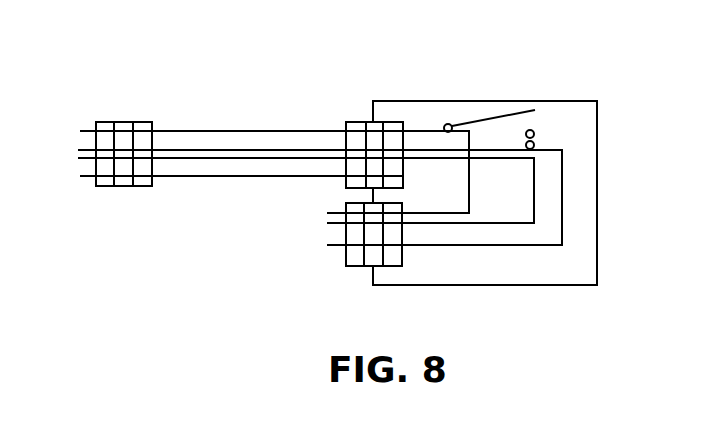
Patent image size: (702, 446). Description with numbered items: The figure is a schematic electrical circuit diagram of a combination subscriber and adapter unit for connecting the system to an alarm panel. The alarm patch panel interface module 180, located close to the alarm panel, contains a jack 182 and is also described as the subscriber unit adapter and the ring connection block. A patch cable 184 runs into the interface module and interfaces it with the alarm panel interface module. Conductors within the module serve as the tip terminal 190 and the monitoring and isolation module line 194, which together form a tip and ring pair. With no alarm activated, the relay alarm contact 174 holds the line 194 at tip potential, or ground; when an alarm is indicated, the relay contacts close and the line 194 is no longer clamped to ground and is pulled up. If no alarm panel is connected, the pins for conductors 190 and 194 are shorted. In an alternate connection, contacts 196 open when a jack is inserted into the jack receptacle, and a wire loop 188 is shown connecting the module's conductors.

The relay alarm contact 174 is at (352, 269).
The alarm patch panel interface module 180 is at (589, 96).
The jack 182 is at (352, 122).
The patch cable 184 is at (187, 131).
The wire loop 188 is at (508, 225).
The tip terminal 190 is at (463, 248).
The monitoring and isolation module line 194 is at (428, 132).
The contacts 196 is at (538, 144).